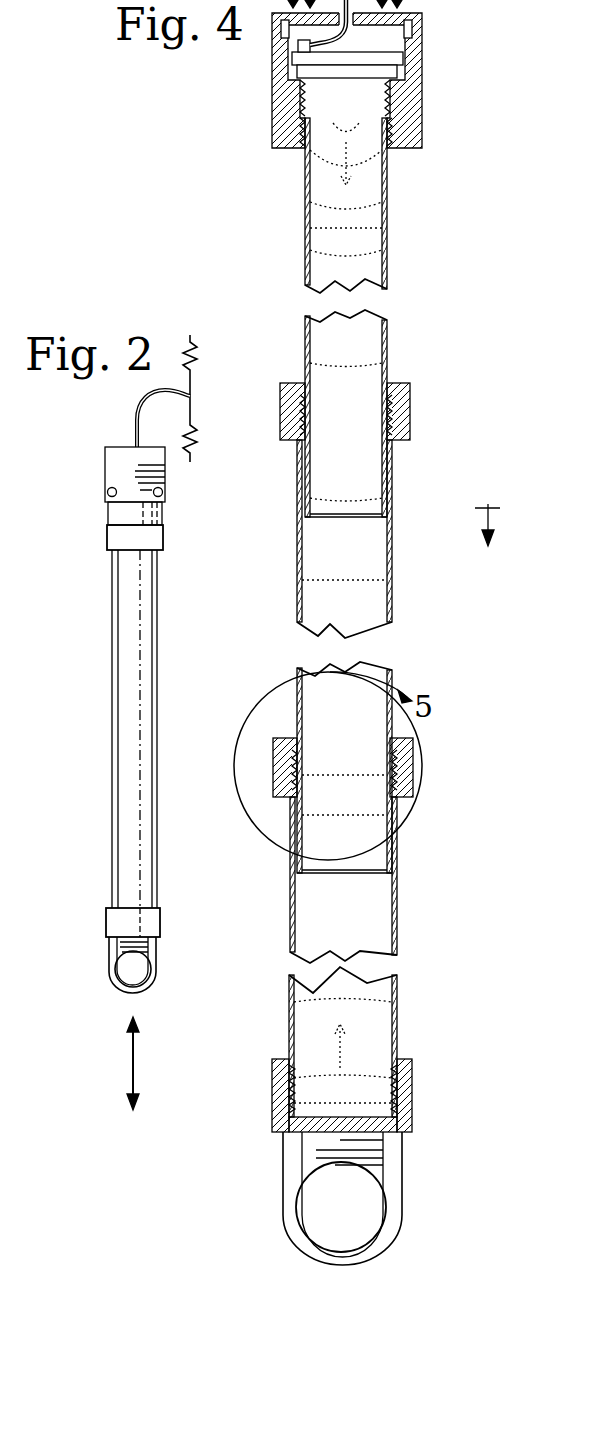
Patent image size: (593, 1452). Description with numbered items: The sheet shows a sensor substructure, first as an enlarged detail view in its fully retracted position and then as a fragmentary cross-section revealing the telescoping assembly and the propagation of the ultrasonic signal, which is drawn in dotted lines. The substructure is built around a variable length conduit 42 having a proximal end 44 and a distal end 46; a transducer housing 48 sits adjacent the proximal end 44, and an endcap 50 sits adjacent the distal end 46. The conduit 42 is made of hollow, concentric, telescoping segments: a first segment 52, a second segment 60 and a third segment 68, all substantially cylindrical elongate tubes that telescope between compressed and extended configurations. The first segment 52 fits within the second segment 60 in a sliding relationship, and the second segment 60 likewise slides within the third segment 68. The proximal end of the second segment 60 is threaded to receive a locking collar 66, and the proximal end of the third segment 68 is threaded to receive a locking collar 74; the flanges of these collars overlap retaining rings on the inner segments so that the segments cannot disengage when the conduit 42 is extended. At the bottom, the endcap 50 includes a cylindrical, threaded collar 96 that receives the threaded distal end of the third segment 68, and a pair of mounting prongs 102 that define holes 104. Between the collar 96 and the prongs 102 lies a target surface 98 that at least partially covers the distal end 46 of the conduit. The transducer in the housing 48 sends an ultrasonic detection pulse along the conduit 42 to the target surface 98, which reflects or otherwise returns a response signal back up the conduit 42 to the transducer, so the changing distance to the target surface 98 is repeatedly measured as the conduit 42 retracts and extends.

In FIG. 2, the variable length conduit 42 is at (111, 709).
In FIG. 2, the proximal end 44 is at (96, 522).
In FIG. 2, the distal end 46 is at (102, 900).
In FIG. 4, the transducer housing 48 is at (422, 50).
In FIG. 2, the transducer housing 48 is at (105, 456).
In FIG. 4, the endcap 50 is at (412, 1080).
In FIG. 2, the endcap 50 is at (106, 921).
In FIG. 4, the first segment 52 is at (392, 208).
In FIG. 4, the second segment 60 is at (392, 610).
In FIG. 4, the locking collar 66 is at (410, 408).
In FIG. 4, the third segment 68 is at (397, 908).
In FIG. 4, the locking collar 74 is at (413, 754).
In FIG. 4, the threaded collar 96 is at (287, 1059).
In FIG. 4, the target surface 98 is at (340, 1112).
In FIG. 4, the mounting prongs 102 is at (392, 1145).
In FIG. 4, the holes 104 is at (368, 1238).